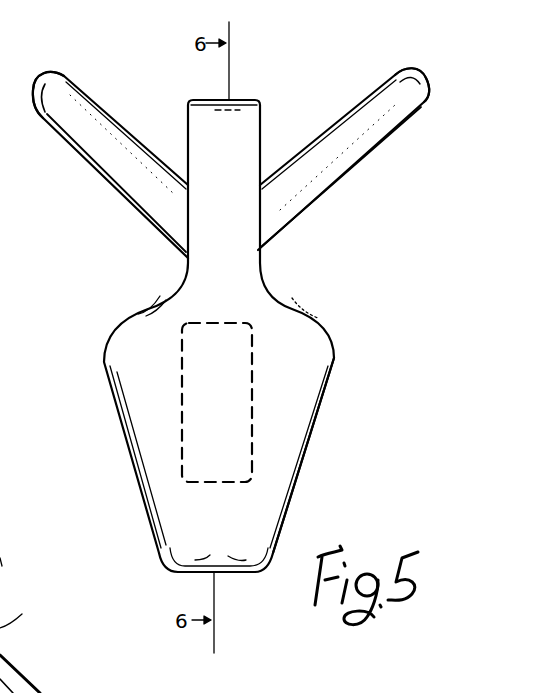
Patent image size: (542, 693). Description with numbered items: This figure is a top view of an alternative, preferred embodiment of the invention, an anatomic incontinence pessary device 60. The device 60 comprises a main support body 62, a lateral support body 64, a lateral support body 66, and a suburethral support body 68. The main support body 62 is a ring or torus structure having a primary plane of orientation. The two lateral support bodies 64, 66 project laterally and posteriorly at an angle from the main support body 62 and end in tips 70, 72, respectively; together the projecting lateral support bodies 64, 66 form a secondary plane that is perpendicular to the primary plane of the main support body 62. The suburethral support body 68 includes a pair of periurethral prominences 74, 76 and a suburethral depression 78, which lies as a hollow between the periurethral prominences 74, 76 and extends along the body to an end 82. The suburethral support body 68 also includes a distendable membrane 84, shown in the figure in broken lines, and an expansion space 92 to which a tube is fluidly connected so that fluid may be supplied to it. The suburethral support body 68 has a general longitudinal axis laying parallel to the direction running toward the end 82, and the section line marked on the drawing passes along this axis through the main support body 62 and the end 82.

The anatomic incontinence pessary device 60 is at (362, 305).
The main support body 62 is at (262, 131).
The lateral support body 64 is at (111, 108).
The lateral support body 66 is at (341, 101).
The suburethral support body 68 is at (309, 438).
The tip 70 is at (36, 78).
The tip 72 is at (424, 72).
The periurethral prominence 74 is at (156, 364).
The periurethral prominence 76 is at (301, 366).
The suburethral depression 78 is at (25, 612).
The end 82 is at (237, 574).
The distendable membrane 84 is at (228, 410).
The expansion space 92 is at (179, 453).